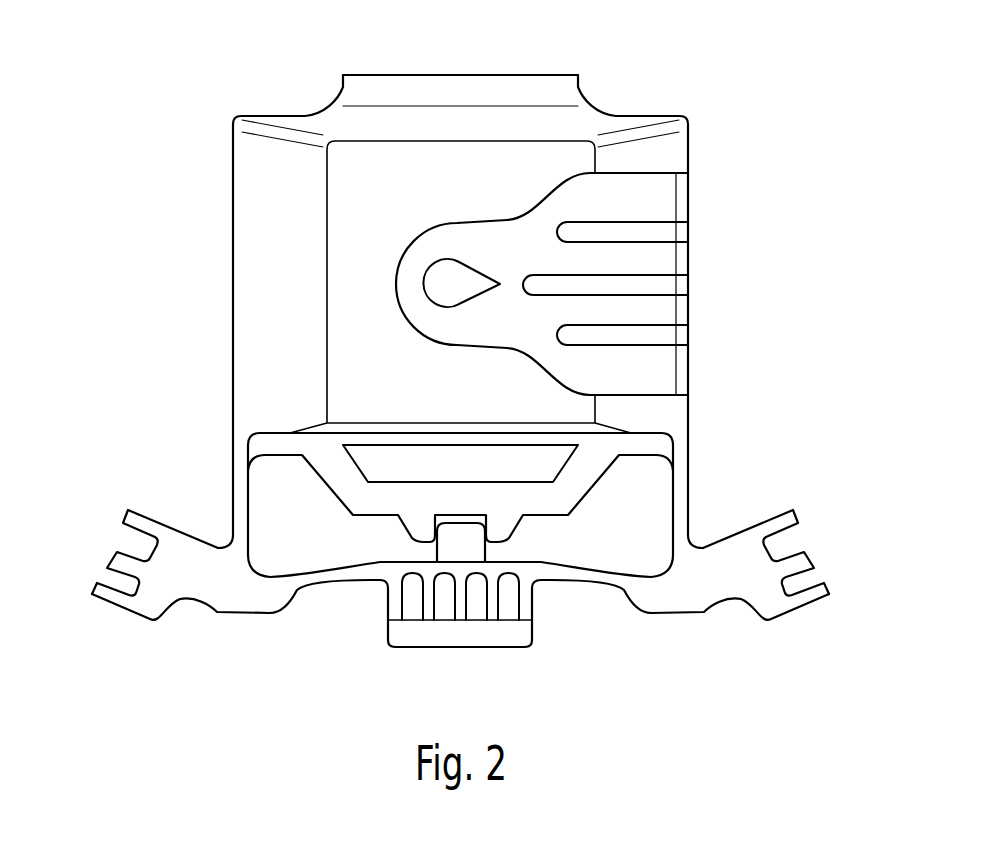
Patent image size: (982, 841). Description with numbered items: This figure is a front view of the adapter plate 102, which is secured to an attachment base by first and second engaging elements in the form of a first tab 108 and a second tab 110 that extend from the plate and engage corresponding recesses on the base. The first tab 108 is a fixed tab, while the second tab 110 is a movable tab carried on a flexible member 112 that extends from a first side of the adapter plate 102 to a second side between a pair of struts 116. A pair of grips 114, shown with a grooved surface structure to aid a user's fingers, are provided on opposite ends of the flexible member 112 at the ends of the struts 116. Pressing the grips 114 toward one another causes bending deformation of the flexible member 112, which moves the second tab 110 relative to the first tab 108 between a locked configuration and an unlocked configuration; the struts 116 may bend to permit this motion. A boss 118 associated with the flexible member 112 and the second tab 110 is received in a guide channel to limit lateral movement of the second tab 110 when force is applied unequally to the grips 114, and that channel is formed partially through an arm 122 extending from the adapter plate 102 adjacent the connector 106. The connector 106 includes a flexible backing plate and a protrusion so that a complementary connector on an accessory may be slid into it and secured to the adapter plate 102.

The adapter plate 102 is at (205, 92).
The connector 106 is at (576, 262).
The first tab 108 is at (510, 92).
The second tab 110 is at (498, 640).
The flexible member 112 is at (353, 582).
The grips 114 is at (113, 555).
The struts 116 is at (240, 498).
The boss 118 is at (485, 548).
The arm 122 is at (343, 489).